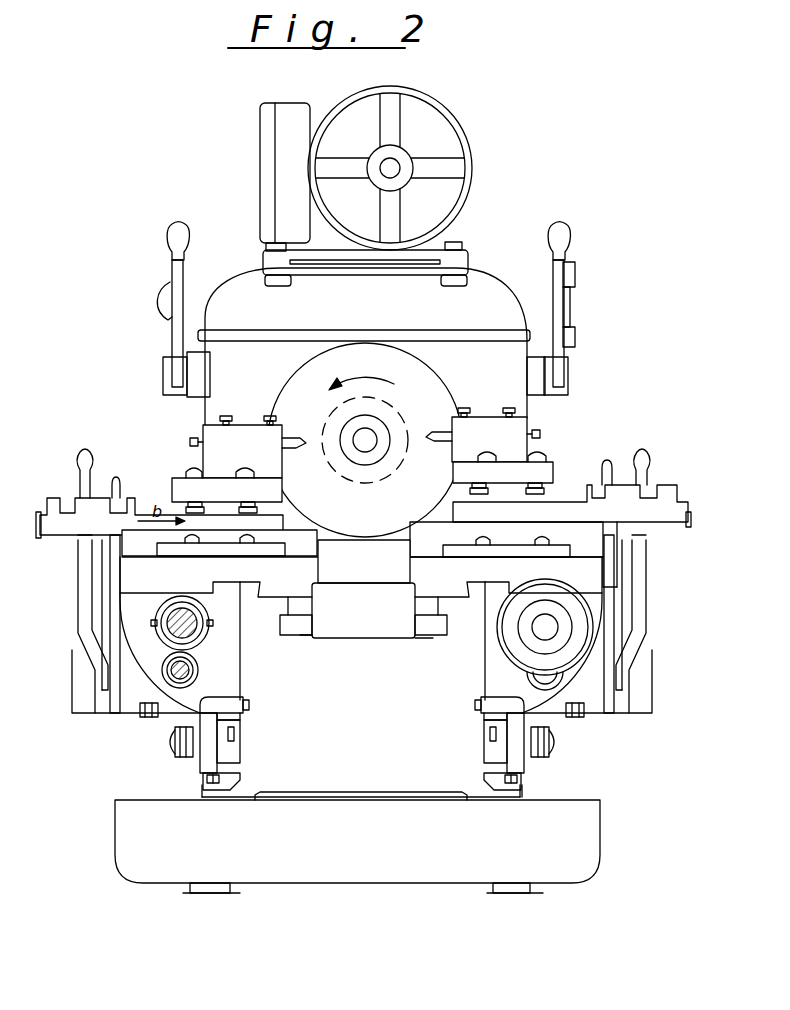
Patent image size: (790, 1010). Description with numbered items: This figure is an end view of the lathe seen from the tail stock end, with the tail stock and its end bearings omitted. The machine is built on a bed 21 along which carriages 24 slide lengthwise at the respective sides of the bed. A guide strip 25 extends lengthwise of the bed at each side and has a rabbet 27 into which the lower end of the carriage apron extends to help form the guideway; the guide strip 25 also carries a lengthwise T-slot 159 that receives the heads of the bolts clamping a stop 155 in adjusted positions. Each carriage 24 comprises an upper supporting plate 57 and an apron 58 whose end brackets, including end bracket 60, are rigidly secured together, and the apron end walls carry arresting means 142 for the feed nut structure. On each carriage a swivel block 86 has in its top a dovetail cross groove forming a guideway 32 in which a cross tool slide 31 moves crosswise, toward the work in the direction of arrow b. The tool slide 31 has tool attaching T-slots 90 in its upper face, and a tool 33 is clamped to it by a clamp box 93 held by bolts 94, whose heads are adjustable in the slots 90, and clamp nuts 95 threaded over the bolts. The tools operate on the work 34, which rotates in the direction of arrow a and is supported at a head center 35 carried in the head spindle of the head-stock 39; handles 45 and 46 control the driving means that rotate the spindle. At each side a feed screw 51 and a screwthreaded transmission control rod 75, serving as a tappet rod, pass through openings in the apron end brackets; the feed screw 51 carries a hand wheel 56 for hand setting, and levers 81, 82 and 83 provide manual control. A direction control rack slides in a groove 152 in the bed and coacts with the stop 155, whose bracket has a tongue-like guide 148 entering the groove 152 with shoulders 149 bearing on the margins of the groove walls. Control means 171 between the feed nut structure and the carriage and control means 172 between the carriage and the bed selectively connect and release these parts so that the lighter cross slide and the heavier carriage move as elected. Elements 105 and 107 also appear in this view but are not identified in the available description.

The bed 21 is at (355, 788).
The carriage 24 is at (309, 572).
The guide strip 25 is at (232, 757).
The rabbet 27 is at (234, 738).
The cross tool slide 31 is at (55, 510).
The guideway 32 is at (124, 533).
The tool 33 is at (296, 438).
The work 34 is at (396, 406).
The head center 35 is at (368, 445).
The head-stock 39 is at (462, 345).
The handle 45 is at (184, 245).
The handle 46 is at (160, 298).
The feed screw 51 is at (196, 632).
The hand wheel 56 is at (497, 646).
The upper supporting plate 57 is at (147, 597).
The apron 58 is at (130, 600).
The end bracket 60 is at (143, 668).
The transmission control rod 75 is at (197, 668).
The lever 81 is at (89, 455).
The lever 82 is at (78, 607).
The lever 83 is at (119, 480).
The swivel block 86 is at (292, 532).
The T-slots 90 is at (133, 510).
The clamp box 93 is at (244, 430).
The bolts 94 is at (246, 470).
The clamp nuts 95 is at (239, 472).
The bolt 105 is at (192, 540).
The bolt 107 is at (246, 548).
The arresting means 142 is at (200, 618).
The guide 148 is at (243, 698).
The shoulders 149 is at (244, 718).
The groove 152 is at (250, 708).
The stop 155 is at (226, 694).
The T-slot 159 is at (206, 758).
The control means 171 is at (141, 722).
The control means 172 is at (172, 752).